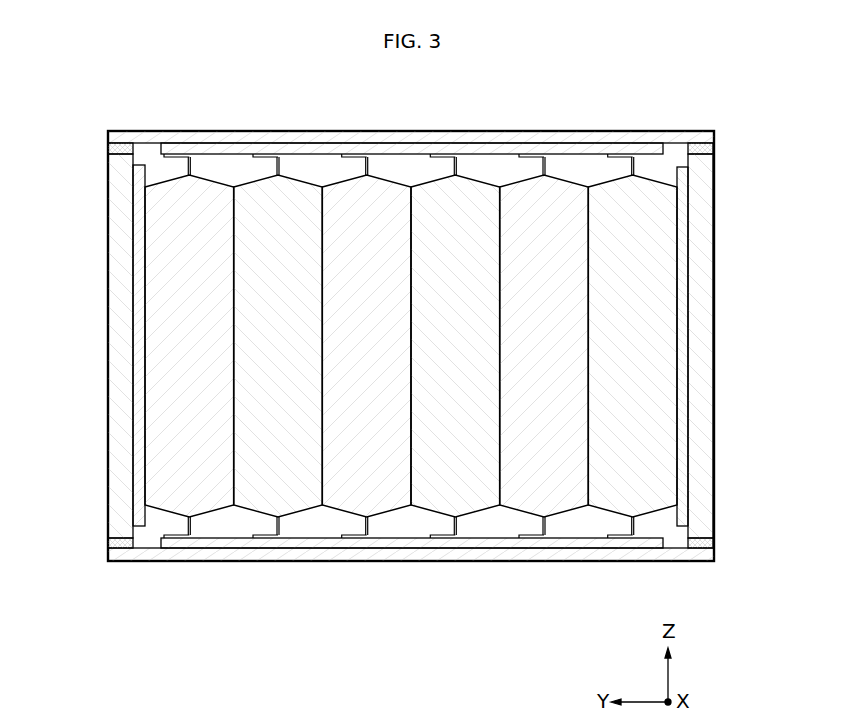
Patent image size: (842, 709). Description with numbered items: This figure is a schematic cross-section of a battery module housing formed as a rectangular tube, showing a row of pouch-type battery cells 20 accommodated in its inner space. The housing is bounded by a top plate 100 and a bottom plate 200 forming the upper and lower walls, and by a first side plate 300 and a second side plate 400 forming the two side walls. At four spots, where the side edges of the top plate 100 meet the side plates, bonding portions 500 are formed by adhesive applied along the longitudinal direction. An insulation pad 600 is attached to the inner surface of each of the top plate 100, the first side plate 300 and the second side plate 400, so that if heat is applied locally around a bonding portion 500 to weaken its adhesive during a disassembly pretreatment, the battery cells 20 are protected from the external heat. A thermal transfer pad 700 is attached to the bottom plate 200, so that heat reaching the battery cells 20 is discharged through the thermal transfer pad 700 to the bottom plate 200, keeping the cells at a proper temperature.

The battery cell 20 is at (396, 170).
The top plate 100 is at (596, 137).
The bottom plate 200 is at (597, 556).
The first side plate 300 is at (715, 337).
The second side plate 400 is at (108, 336).
The bonding portion 500 is at (107, 146).
The insulation pad 600 is at (497, 150).
The thermal transfer pad 700 is at (501, 542).